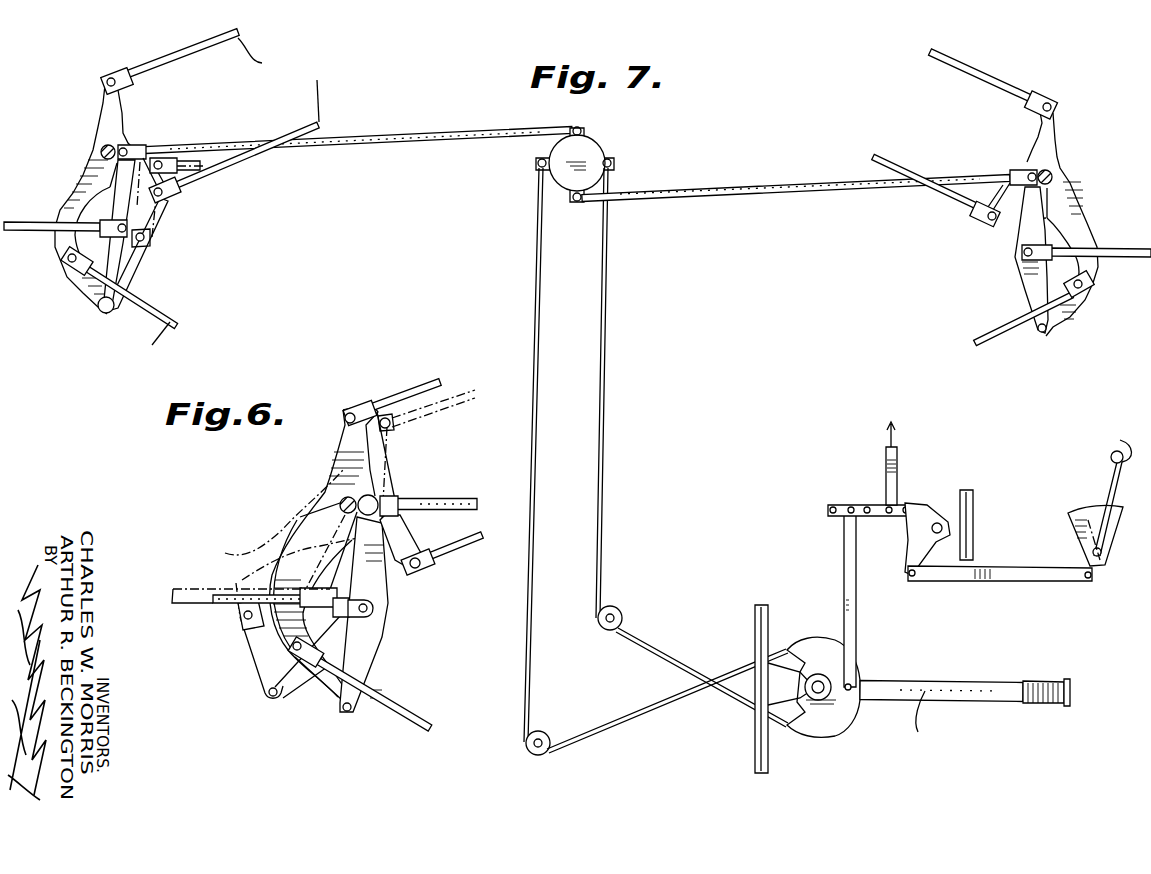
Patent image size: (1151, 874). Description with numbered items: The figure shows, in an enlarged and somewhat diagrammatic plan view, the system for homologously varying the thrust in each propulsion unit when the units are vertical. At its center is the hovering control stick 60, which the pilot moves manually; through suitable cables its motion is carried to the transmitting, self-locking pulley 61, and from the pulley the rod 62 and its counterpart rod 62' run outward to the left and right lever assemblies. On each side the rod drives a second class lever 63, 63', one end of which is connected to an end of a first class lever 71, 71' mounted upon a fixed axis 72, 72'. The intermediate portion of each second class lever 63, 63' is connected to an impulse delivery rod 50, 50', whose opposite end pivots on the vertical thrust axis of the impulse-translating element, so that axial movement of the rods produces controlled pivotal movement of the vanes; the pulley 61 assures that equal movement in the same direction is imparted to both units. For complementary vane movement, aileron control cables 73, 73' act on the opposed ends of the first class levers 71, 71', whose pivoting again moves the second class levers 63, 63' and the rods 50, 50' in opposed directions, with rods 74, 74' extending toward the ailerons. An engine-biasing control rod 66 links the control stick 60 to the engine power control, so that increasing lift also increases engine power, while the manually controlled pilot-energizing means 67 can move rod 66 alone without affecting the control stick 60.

In FIG. 6, the impulse delivery rod 50 is at (272, 619).
In FIG. 7, the impulse delivery rod 50 is at (65, 243).
In FIG. 7, the impulse delivery rod 50' is at (1086, 270).
In FIG. 7, the control stick 60 is at (978, 690).
In FIG. 7, the self-locking pulley 61 is at (592, 153).
In FIG. 6, the rod 62 is at (420, 488).
In FIG. 7, the rod 62 is at (345, 158).
In FIG. 7, the rod 62' is at (809, 195).
In FIG. 6, the second class lever 63 is at (385, 613).
In FIG. 7, the second class lever 63 is at (146, 236).
In FIG. 7, the second class lever 63' is at (1004, 260).
In FIG. 7, the engine-biasing control rod 66 is at (895, 460).
In FIG. 7, the manually controlled pilot-energizing means 67 is at (1110, 483).
In FIG. 6, the first class lever 71 is at (299, 552).
In FIG. 7, the first class lever 71 is at (111, 199).
In FIG. 7, the first class lever 71' is at (1078, 224).
In FIG. 6, the fixed axis 72 is at (316, 506).
In FIG. 7, the fixed axis 72 is at (82, 153).
In FIG. 7, the fixed axis 72' is at (1045, 178).
In FIG. 6, the aileron control cable 73 is at (416, 467).
In FIG. 7, the aileron control cable 73 is at (295, 116).
In FIG. 7, the aileron control cable 73' is at (965, 138).
In FIG. 6, the rod to aileron 74 is at (360, 694).
In FIG. 7, the rod to aileron 74 is at (122, 301).
In FIG. 7, the rod to aileron 74' is at (1018, 308).